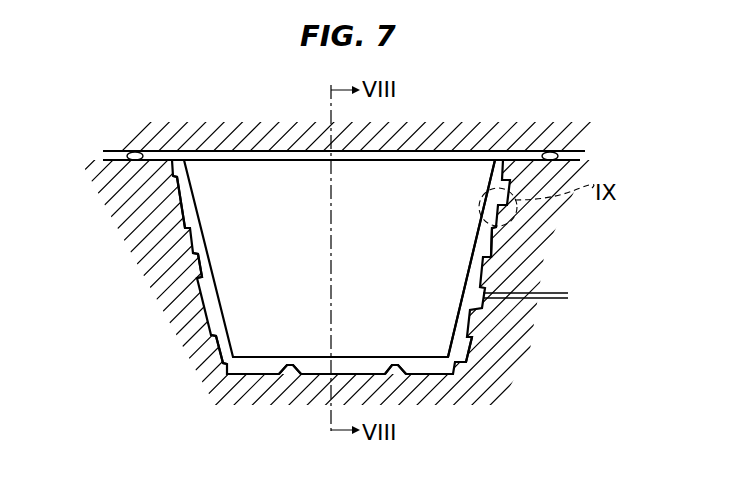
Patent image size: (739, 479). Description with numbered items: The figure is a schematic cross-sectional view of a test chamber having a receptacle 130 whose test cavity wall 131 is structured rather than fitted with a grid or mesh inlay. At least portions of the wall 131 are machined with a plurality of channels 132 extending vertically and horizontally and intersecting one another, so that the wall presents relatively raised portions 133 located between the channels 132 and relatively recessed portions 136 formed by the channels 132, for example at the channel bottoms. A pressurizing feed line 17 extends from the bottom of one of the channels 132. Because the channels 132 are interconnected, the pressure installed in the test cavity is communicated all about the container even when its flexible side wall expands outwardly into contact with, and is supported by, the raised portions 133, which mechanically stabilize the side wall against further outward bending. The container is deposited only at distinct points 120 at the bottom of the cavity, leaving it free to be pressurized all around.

The pressurizing feed line 17 is at (532, 292).
The distinct points 120 is at (286, 365).
The receptacle 130 is at (182, 243).
The wall 131 is at (458, 318).
The channels 132 is at (202, 298).
The relatively raised portions 133 is at (182, 212).
The relatively recessed portions 136 is at (214, 347).